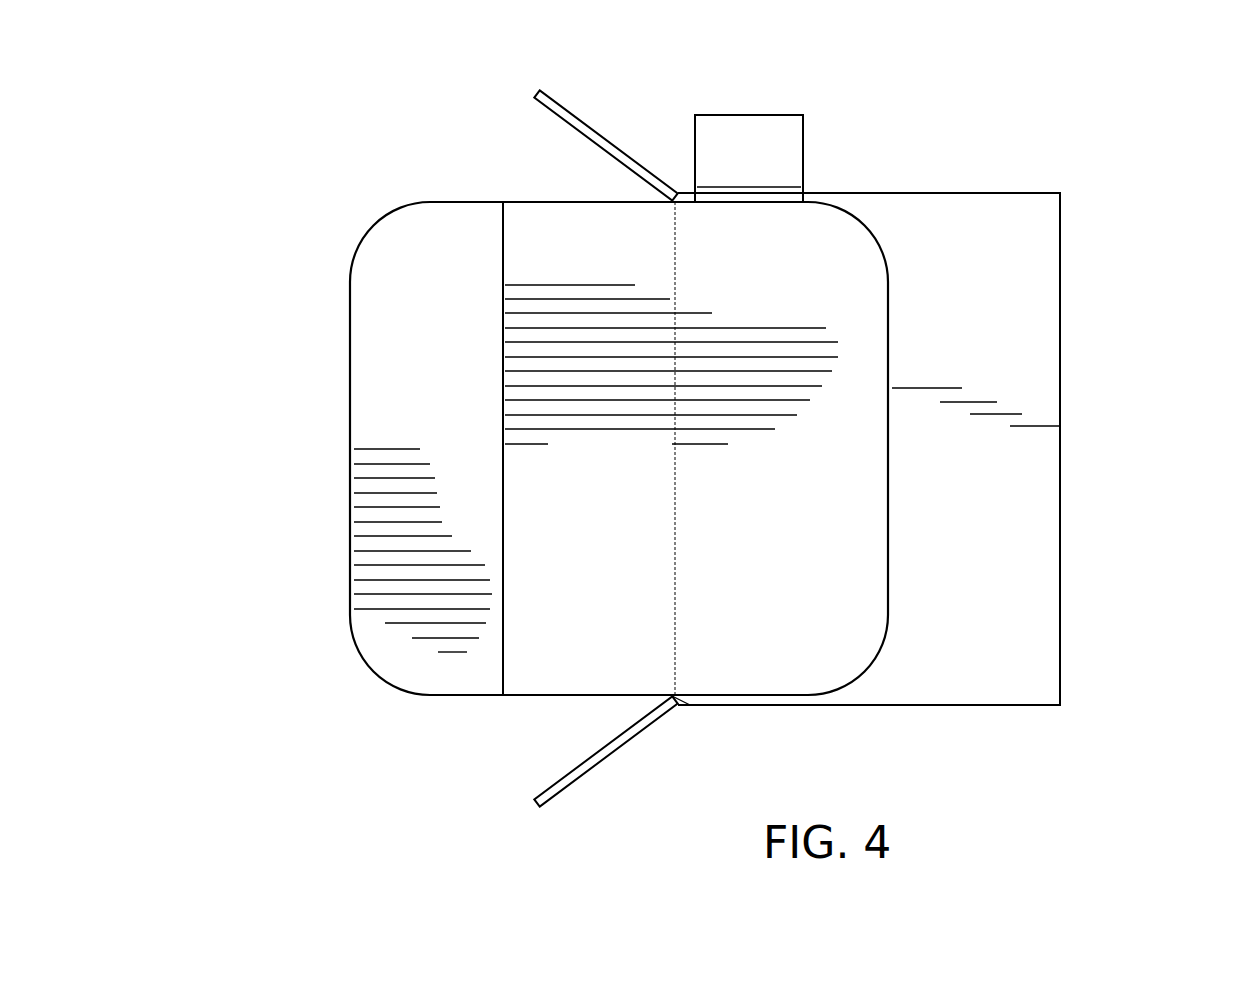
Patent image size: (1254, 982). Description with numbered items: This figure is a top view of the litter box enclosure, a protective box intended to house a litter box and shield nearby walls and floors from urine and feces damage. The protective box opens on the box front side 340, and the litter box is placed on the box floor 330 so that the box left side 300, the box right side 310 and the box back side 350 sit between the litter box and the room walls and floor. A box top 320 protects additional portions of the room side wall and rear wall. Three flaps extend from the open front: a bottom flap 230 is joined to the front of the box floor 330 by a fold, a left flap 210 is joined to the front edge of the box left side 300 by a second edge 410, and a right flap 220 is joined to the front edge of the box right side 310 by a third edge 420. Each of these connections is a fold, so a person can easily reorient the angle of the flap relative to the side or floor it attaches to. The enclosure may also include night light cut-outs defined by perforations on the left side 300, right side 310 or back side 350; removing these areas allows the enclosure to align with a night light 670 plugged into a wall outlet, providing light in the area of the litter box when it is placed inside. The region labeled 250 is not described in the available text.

The left flap 210 is at (565, 118).
The right flap 220 is at (598, 760).
The bottom flap 230 is at (560, 688).
The first compartment liquid 250 is at (365, 403).
The box left side 300 is at (928, 192).
The box right side 310 is at (932, 708).
The box top 320 is at (1018, 540).
The box floor 330 is at (752, 680).
The box front side 340 is at (270, 492).
The box back side 350 is at (1060, 412).
The second edge 410 is at (673, 190).
The third edge 420 is at (684, 705).
The night light 670 is at (758, 125).